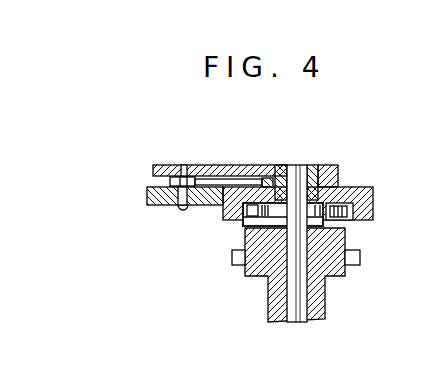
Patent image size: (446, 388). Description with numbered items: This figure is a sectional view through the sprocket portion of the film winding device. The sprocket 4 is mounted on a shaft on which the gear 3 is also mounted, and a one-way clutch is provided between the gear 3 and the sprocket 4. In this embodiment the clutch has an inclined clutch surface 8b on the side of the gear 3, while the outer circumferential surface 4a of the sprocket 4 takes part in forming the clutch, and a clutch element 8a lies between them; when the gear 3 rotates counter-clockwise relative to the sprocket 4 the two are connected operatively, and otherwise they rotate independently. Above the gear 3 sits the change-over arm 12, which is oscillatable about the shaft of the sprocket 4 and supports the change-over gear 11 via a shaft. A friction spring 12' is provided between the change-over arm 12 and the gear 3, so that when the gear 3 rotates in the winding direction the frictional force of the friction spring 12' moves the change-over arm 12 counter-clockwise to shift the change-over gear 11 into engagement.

The change-over arm 12 is at (220, 158).
The friction spring 12' is at (350, 169).
The change-over gear 11 is at (167, 207).
The gear mounted on a shaft of a sprocket 3 is at (373, 199).
The inclined clutch surface 8b is at (349, 216).
The bearing 8a is at (344, 220).
The outer circumferential surface of the sprocket 4a is at (340, 222).
The sprocket 4 is at (342, 228).